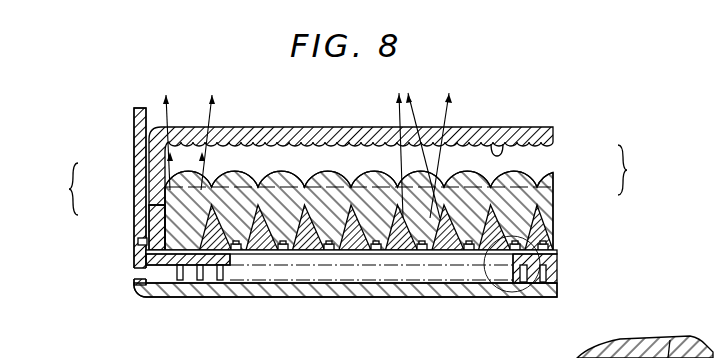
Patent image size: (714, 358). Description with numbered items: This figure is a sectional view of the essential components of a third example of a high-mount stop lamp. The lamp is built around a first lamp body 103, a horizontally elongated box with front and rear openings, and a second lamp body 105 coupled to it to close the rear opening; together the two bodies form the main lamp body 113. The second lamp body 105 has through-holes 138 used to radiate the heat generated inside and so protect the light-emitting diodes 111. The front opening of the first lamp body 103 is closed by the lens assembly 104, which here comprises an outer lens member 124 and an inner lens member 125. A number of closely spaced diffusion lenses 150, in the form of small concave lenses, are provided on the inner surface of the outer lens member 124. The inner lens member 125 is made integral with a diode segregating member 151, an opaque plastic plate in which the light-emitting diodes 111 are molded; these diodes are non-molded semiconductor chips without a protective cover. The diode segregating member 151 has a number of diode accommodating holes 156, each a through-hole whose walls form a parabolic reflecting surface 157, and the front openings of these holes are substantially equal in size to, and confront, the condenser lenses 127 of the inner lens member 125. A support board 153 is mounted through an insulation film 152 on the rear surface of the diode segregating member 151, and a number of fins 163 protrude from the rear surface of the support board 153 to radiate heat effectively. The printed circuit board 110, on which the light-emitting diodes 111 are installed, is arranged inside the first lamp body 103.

The first lamp body 103 is at (128, 170).
The lens assembly 104 is at (641, 170).
The second lamp body 105 is at (129, 255).
The printed circuit board 110 is at (607, 108).
The light-emitting diodes 111 is at (247, 254).
The main lamp body 113 is at (59, 189).
The outer lens member 124 is at (555, 135).
The inner lens member 125 is at (555, 190).
The condenser lenses 127 is at (340, 168).
The through-holes 138 is at (133, 277).
The diffusion lenses 150 is at (507, 127).
The diode segregating member 151 is at (555, 224).
The insulation film 152 is at (557, 252).
The support board 153 is at (557, 259).
The diode accommodating holes 156 is at (317, 255).
The parabolic reflecting surface 157 is at (313, 187).
The fins 163 is at (557, 281).